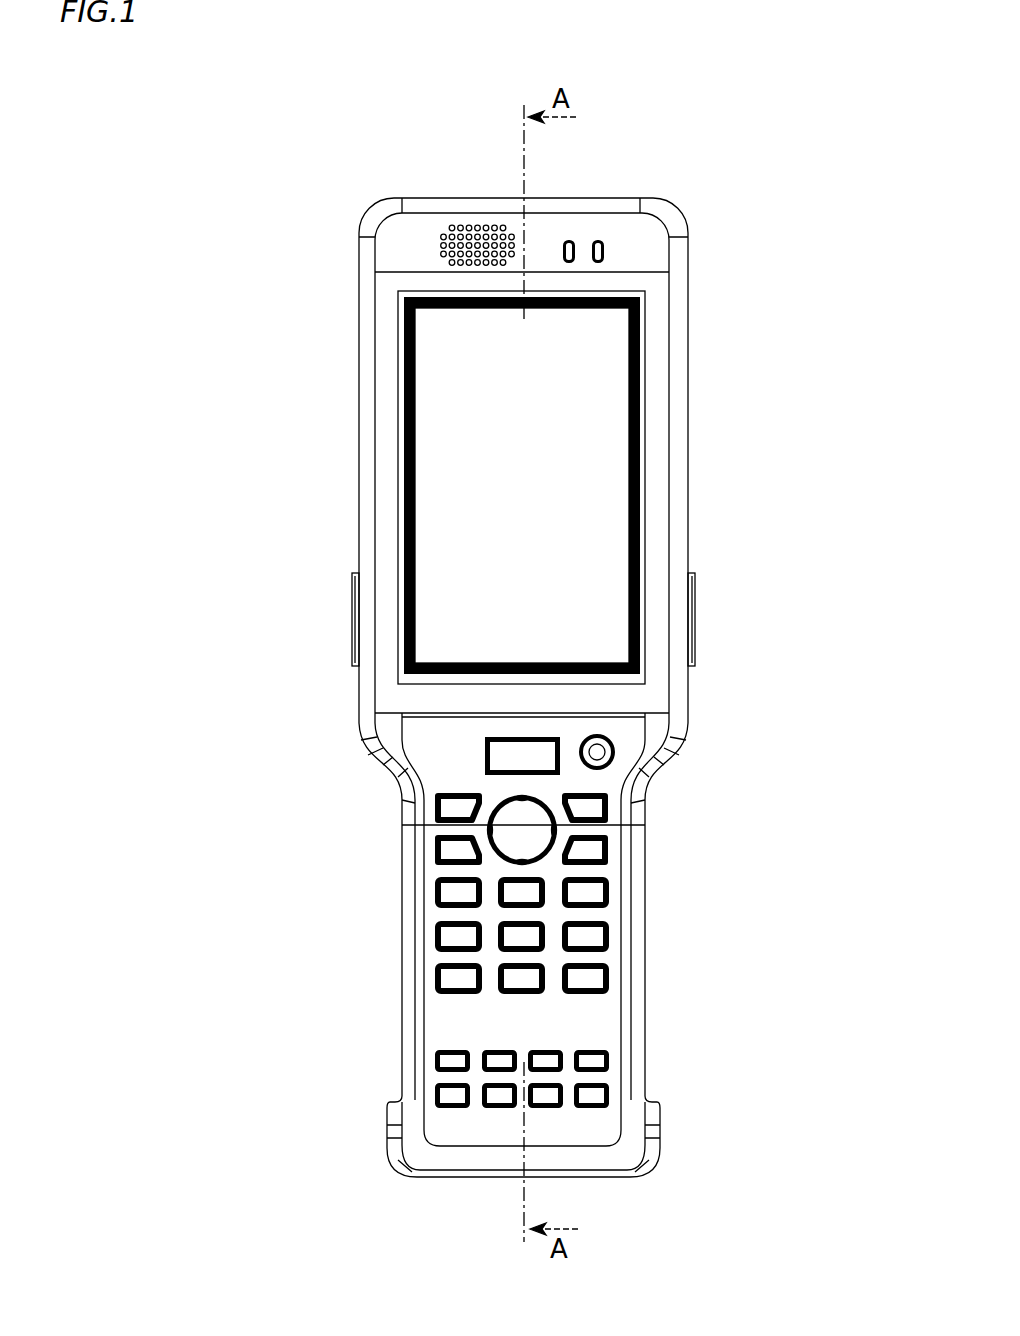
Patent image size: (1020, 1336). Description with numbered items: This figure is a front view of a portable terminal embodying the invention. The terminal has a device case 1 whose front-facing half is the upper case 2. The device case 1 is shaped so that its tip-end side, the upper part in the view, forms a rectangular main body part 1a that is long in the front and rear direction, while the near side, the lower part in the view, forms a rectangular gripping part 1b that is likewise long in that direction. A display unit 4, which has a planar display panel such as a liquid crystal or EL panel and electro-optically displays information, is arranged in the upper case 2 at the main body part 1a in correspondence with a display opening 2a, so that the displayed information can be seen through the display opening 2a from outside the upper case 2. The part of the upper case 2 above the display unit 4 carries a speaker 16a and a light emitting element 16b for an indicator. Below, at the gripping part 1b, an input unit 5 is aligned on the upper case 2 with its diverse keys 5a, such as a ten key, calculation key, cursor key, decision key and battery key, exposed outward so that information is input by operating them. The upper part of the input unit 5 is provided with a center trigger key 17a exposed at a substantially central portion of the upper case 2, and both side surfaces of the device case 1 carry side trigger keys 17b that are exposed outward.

The device case 1 is at (372, 208).
The main body part 1a is at (358, 429).
The gripping part 1b is at (402, 972).
The upper case 2 is at (660, 544).
The display opening 2a is at (632, 449).
The display unit 4 is at (598, 402).
The input unit 5 is at (464, 893).
The diverse keys 5a is at (536, 817).
The speaker 16a is at (472, 228).
The light emitting element (LED) for indicator 16b is at (598, 238).
The center trigger key 17a is at (490, 757).
The side trigger keys 17b is at (354, 620).